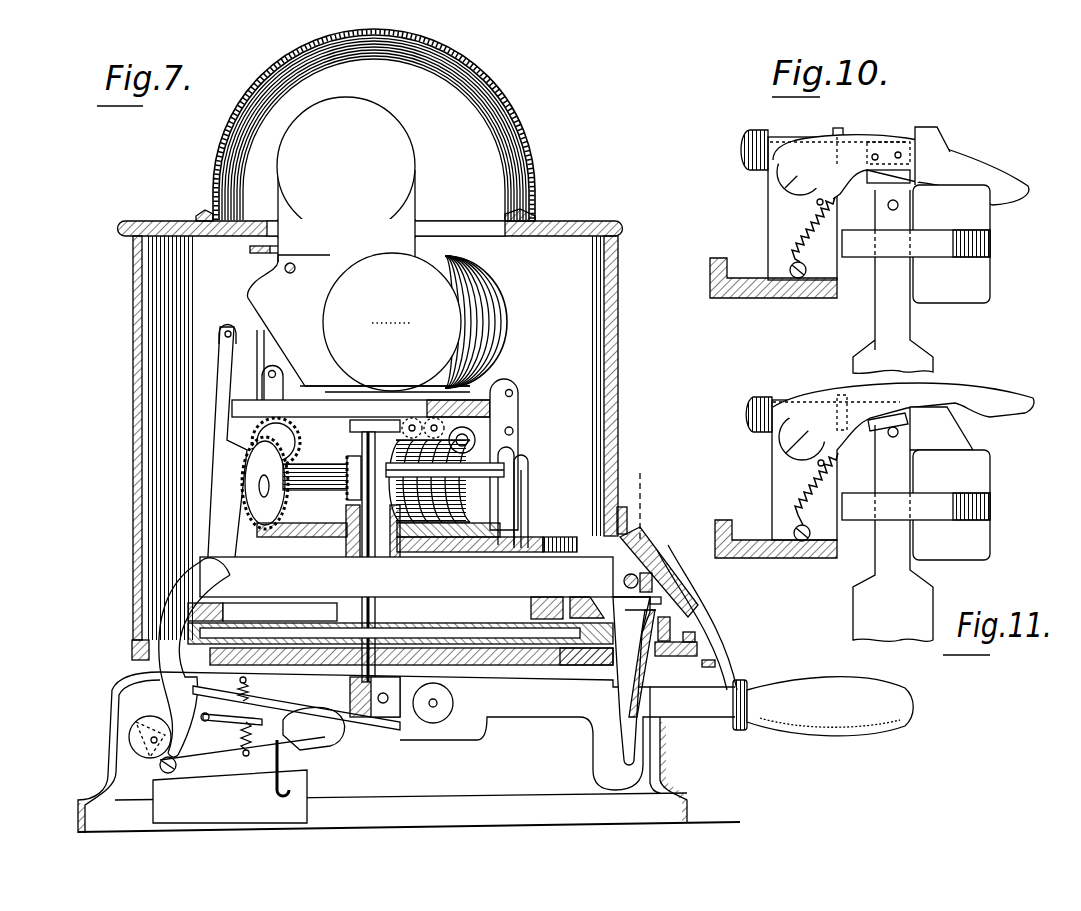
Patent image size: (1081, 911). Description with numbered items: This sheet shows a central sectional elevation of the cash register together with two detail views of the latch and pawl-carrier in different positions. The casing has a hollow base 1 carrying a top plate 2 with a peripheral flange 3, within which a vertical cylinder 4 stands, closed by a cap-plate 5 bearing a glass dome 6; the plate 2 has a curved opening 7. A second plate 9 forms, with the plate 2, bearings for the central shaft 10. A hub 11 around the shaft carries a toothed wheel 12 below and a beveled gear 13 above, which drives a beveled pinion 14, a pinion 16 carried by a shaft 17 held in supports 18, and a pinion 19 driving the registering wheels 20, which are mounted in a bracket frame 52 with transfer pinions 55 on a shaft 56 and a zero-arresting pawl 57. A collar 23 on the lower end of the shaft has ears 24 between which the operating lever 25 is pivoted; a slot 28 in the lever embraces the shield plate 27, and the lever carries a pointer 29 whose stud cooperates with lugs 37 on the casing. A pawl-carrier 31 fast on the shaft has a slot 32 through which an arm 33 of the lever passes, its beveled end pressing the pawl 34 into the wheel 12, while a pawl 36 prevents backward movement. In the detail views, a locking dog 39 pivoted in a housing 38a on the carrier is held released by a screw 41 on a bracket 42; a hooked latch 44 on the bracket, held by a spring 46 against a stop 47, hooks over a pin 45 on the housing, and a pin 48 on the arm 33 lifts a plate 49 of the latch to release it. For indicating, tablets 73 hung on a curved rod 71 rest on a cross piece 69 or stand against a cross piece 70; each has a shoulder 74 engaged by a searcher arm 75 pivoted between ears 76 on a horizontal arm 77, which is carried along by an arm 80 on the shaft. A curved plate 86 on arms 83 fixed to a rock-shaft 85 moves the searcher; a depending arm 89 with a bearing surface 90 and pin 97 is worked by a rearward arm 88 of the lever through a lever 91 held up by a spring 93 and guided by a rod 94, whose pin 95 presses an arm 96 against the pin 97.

In FIG. 7, the hollow base 1 is at (106, 737).
In FIG. 7, the top plate 2 is at (527, 665).
In FIG. 7, the peripheral flange 3 is at (131, 646).
In FIG. 7, the vertical cylinder 4 is at (619, 348).
In FIG. 7, the cap-plate 5 is at (611, 220).
In FIG. 7, the glass dome 6 is at (532, 150).
In FIG. 7, the curved opening 7 is at (576, 650).
In FIG. 7, the second horizontal plate 9 is at (497, 553).
In FIG. 7, the central shaft 10 is at (412, 590).
In FIG. 7, the hub 11 is at (345, 583).
In FIG. 7, the toothed wheel 12 is at (535, 597).
In FIG. 7, the beveled gear wheel 13 is at (322, 531).
In FIG. 7, the beveled pinion 14 is at (265, 483).
In FIG. 7, the pinion 16 is at (288, 436).
In FIG. 7, the shaft 17 is at (445, 467).
In FIG. 7, the supports 18 is at (529, 498).
In FIG. 7, the pinion 19 is at (346, 475).
In FIG. 7, the registering wheels 20 is at (429, 481).
In FIG. 7, the collar 23 is at (350, 690).
In FIG. 7, the ears 24 is at (442, 694).
In FIG. 7, the operating handle or lever 25 is at (536, 747).
In FIG. 7, the curved plate or shield 27 is at (648, 676).
In FIG. 7, the vertical slot 28 is at (622, 724).
In FIG. 7, the pointer 29 is at (722, 645).
In FIG. 7, the arm or pawl-carrier 31 is at (478, 627).
In FIG. 10, the arm or pawl-carrier 31 is at (928, 240).
In FIG. 11, the arm or pawl-carrier 31 is at (916, 506).
In FIG. 7, the narrow slot 32 is at (672, 627).
In FIG. 7, the arm 33 is at (631, 615).
In FIG. 10, the arm 33 is at (875, 307).
In FIG. 11, the arm 33 is at (893, 533).
In FIG. 7, the pawl 34 is at (577, 596).
In FIG. 7, the pawl 36 is at (702, 674).
In FIG. 7, the lugs 37 is at (700, 640).
In FIG. 10, the housing 38a is at (951, 244).
In FIG. 11, the housing 38a is at (951, 505).
In FIG. 10, the locking dog 39 is at (945, 140).
In FIG. 11, the locking dog 39 is at (941, 428).
In FIG. 7, the screw 41 is at (624, 584).
In FIG. 10, the bracket 42 is at (776, 213).
In FIG. 11, the bracket 42 is at (776, 477).
In FIG. 7, the hooked latch 44 is at (665, 592).
In FIG. 10, the hooked latch 44 is at (988, 172).
In FIG. 11, the hooked latch 44 is at (978, 392).
In FIG. 7, the stud or pin 45 is at (663, 600).
In FIG. 10, the stud or pin 45 is at (978, 197).
In FIG. 11, the stud or pin 45 is at (1000, 458).
In FIG. 10, the spring 46 is at (800, 246).
In FIG. 11, the spring 46 is at (800, 512).
In FIG. 10, the stop 47 is at (818, 204).
In FIG. 11, the stop 47 is at (819, 466).
In FIG. 10, the pin 48 is at (893, 211).
In FIG. 11, the pin 48 is at (893, 438).
In FIG. 10, the lug or plate 49 is at (875, 184).
In FIG. 11, the lug or plate 49 is at (888, 412).
In FIG. 7, the bracket frame 52 is at (516, 452).
In FIG. 7, the transfer pinions 55 is at (415, 418).
In FIG. 7, the shaft 56 is at (514, 430).
In FIG. 7, the pawl 57 is at (476, 441).
In FIG. 7, the cross piece 69 is at (492, 390).
In FIG. 7, the cross piece 70 is at (256, 254).
In FIG. 7, the curved rod 71 is at (296, 269).
In FIG. 7, the indicating tablets 73 is at (514, 328).
In FIG. 7, the shoulder 74 is at (262, 282).
In FIG. 7, the searcher arm 75 is at (272, 350).
In FIG. 7, the ears 76 is at (272, 385).
In FIG. 7, the horizontal arm 77 is at (361, 408).
In FIG. 7, the arm 80 is at (362, 442).
In FIG. 7, the arm 83 is at (227, 457).
In FIG. 7, the rock-shaft 85 is at (219, 563).
In FIG. 7, the curved plate 86 is at (233, 323).
In FIG. 7, the arm 88 is at (392, 732).
In FIG. 7, the depending curved arm 89 is at (192, 657).
In FIG. 7, the bearing surface 90 is at (197, 683).
In FIG. 7, the lever 91 is at (325, 752).
In FIG. 7, the coiled spring 93 is at (250, 687).
In FIG. 7, the guide rod 94 is at (276, 792).
In FIG. 7, the laterally projecting pin 95 is at (257, 739).
In FIG. 7, the arm 96 is at (212, 728).
In FIG. 7, the laterally projecting pin 97 is at (166, 744).